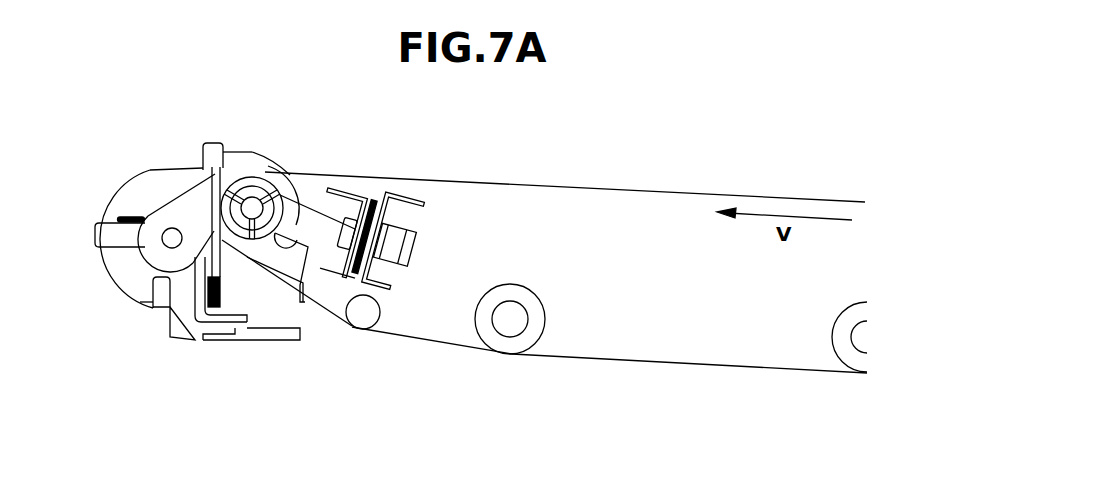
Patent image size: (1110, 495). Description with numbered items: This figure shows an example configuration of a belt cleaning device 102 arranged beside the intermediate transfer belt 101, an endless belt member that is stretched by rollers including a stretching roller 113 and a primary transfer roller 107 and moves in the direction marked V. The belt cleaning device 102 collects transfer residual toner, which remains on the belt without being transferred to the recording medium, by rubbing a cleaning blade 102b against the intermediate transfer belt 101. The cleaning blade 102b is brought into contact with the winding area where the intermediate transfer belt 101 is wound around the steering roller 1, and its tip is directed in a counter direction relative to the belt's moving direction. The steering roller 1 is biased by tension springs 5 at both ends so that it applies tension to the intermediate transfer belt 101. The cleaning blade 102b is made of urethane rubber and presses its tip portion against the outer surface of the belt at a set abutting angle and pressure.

The steering roller 1 is at (287, 175).
The tension spring 5 is at (307, 223).
The intermediate transfer belt 101 is at (567, 187).
The belt cleaning device 102 is at (123, 186).
The cleaning blade 102b is at (228, 266).
The primary transfer roller 107 is at (545, 313).
The stretching roller 113 is at (363, 320).